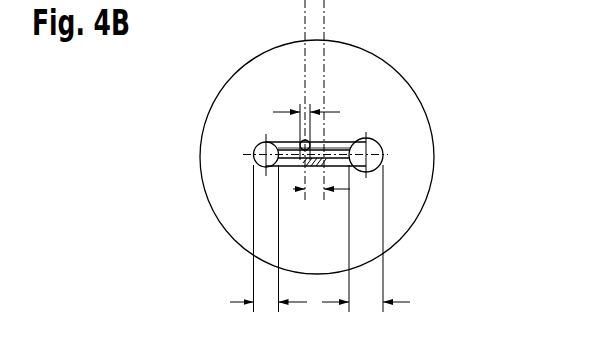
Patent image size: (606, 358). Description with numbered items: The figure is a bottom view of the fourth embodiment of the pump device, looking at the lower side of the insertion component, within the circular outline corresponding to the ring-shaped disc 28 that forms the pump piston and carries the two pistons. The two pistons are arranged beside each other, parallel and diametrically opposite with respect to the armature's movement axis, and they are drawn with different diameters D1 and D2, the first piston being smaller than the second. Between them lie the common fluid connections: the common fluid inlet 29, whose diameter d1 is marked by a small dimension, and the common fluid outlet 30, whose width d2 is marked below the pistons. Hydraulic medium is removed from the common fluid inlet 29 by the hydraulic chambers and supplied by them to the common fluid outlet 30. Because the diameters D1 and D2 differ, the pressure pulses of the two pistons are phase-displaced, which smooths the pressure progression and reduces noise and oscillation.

The disc 28 is at (433, 158).
The common fluid inlet 29 is at (297, 145).
The common fluid outlet 30 is at (323, 144).
The diameter of the common fluid inlet d1 is at (305, 111).
The diameter of the common fluid outlet d2 is at (322, 191).
The diameter of the first piston D1 is at (268, 304).
The diameter of the second piston D2 is at (370, 304).